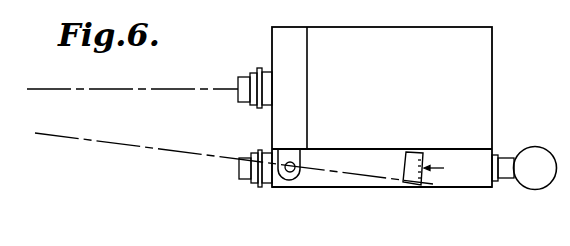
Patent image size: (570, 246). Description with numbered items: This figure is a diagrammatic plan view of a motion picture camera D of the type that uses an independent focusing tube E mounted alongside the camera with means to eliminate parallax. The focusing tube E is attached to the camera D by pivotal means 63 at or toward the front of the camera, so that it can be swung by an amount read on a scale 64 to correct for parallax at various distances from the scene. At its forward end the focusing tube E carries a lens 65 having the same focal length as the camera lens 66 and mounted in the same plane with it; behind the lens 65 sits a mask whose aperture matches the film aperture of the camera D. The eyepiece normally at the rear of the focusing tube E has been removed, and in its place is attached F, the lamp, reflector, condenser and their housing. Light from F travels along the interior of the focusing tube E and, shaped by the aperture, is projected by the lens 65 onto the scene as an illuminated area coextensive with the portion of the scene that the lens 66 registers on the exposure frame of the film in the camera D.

The motion picture camera D is at (382, 107).
The focusing tube E is at (382, 168).
The lamp, reflector, condenser and housing F is at (536, 147).
The pivotal means 63 is at (290, 154).
The scale 64 is at (422, 158).
The lens 65 is at (250, 183).
The camera lens 66 is at (258, 69).